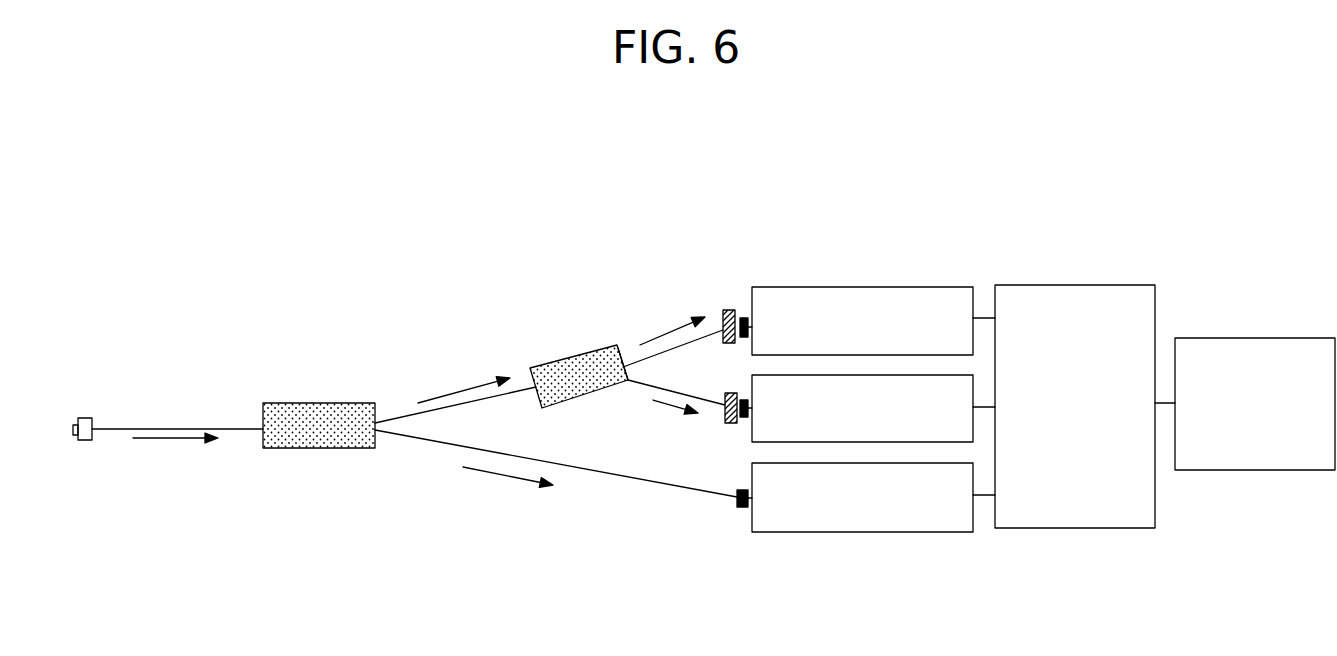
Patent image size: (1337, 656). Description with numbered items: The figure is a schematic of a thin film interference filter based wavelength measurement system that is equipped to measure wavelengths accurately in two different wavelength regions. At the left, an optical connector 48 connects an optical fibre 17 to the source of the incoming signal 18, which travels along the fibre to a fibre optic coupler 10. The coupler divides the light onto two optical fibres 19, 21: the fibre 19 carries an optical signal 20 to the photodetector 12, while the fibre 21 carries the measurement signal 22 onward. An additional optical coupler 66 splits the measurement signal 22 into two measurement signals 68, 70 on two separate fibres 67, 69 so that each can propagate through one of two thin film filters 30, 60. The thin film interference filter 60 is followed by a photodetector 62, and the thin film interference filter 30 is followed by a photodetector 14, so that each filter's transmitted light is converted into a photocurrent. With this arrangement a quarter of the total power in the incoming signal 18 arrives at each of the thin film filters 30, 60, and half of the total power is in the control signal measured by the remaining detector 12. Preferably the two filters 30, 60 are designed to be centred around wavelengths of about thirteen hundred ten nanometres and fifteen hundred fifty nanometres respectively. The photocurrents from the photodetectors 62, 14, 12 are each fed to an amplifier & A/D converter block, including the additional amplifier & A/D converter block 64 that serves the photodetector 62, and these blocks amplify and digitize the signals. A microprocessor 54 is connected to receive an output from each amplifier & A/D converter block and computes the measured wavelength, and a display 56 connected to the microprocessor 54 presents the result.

The optical connector 48 is at (85, 418).
The optical fibre 17 is at (200, 425).
The incoming signal 18 is at (175, 453).
The fibre optic coupler 10 is at (283, 403).
The optical fibre 21 is at (397, 420).
The measurement signal 22 is at (464, 379).
The optical fibre 19 is at (442, 450).
The optical signal 20 is at (508, 490).
The additional optical coupler 66 is at (573, 355).
The fibre 69 is at (625, 385).
The fibre 67 is at (712, 332).
The measurement signal 68 is at (671, 324).
The measurement signal 70 is at (676, 407).
The thin film interference filter 60 is at (726, 310).
The photodetector 62 is at (742, 317).
The thin film interference filter 30 is at (724, 423).
The photodetector 14 is at (740, 418).
The photodetector 12 is at (740, 507).
The amplifier & A/D converter block 64 is at (860, 287).
The microprocessor 54 is at (1040, 285).
The display 56 is at (1312, 338).